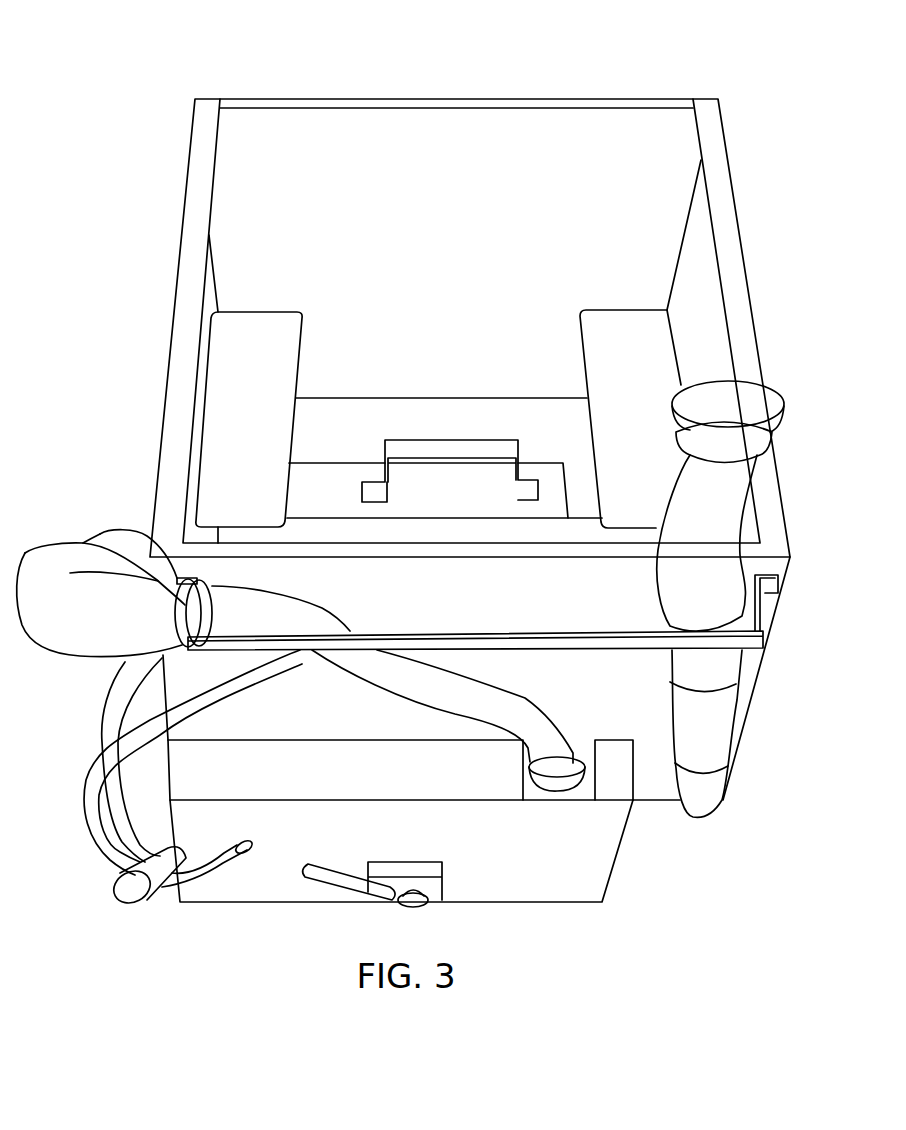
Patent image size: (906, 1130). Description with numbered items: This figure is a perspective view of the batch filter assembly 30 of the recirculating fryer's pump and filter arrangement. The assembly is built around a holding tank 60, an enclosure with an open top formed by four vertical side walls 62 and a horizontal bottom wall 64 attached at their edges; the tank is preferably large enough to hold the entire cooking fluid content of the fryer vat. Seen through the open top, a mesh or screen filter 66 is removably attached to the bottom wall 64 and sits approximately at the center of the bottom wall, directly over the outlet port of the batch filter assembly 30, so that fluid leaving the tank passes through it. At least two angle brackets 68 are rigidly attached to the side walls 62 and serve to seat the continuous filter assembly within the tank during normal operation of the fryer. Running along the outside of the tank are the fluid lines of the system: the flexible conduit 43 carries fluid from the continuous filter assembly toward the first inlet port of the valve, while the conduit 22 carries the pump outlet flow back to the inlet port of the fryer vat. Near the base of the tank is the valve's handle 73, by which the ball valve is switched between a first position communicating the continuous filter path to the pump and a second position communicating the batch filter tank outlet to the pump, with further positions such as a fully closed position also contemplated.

The batch filter assembly 30 is at (749, 169).
The holding tank 60 is at (465, 131).
The side walls 62 is at (372, 125).
The angle brackets 68 is at (296, 312).
The bottom wall 64 is at (350, 405).
The mesh or screen filter 66 is at (545, 470).
The conduit 22 is at (672, 500).
The flexible conduit 43 is at (340, 616).
The handle 73 is at (312, 876).